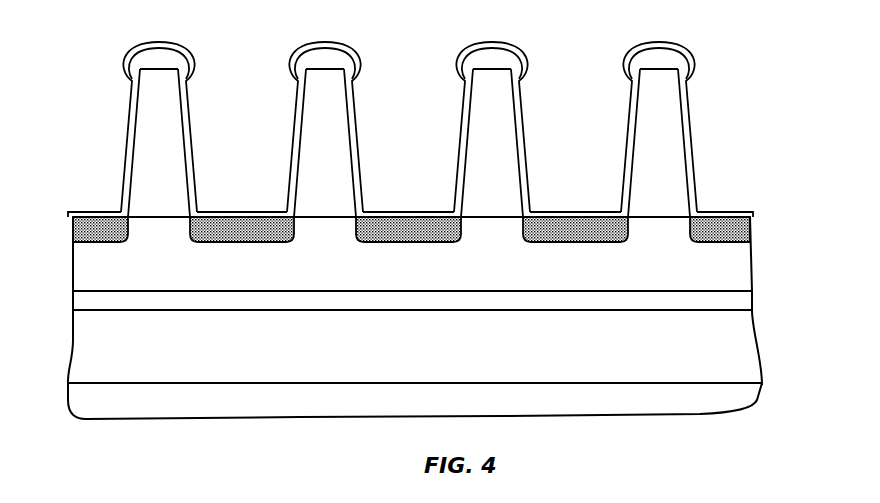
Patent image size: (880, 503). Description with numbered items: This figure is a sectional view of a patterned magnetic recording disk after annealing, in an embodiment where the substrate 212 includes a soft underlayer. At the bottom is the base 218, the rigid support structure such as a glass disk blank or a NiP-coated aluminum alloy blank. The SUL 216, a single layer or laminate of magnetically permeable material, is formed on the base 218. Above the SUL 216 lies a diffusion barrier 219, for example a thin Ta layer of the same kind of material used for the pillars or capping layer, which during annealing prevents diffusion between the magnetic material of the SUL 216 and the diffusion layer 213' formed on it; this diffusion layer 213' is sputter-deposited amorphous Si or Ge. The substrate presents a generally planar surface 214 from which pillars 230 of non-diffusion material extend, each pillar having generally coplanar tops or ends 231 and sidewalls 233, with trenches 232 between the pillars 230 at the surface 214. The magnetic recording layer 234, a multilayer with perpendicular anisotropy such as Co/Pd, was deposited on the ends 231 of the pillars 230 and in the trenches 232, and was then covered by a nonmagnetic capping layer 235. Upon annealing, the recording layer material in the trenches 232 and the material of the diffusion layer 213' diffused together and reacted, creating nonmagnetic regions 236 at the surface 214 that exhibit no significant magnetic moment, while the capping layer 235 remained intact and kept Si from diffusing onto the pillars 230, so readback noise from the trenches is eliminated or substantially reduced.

The substrate 212 is at (823, 66).
The diffusion layer 213' is at (412, 254).
The generally planar surface 214 is at (654, 218).
The soft underlayer (SUL) 216 is at (745, 352).
The base 218 is at (753, 397).
The diffusion barrier 219 is at (745, 305).
The pillars 230 is at (411, 120).
The tops or ends of pillars 231 is at (156, 69).
The trenches 232 is at (100, 217).
The sidewalls 233 is at (134, 139).
The magnetic recording layer 234 is at (157, 53).
The nonmagnetic capping layer 235 is at (127, 134).
The nonmagnetic regions 236 is at (100, 243).